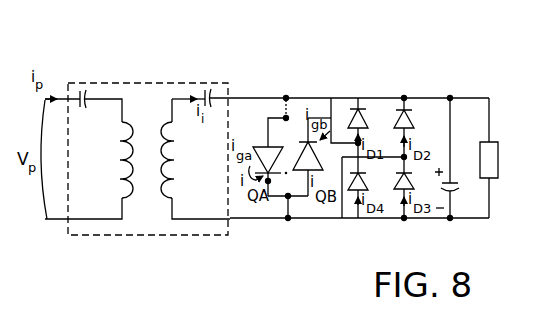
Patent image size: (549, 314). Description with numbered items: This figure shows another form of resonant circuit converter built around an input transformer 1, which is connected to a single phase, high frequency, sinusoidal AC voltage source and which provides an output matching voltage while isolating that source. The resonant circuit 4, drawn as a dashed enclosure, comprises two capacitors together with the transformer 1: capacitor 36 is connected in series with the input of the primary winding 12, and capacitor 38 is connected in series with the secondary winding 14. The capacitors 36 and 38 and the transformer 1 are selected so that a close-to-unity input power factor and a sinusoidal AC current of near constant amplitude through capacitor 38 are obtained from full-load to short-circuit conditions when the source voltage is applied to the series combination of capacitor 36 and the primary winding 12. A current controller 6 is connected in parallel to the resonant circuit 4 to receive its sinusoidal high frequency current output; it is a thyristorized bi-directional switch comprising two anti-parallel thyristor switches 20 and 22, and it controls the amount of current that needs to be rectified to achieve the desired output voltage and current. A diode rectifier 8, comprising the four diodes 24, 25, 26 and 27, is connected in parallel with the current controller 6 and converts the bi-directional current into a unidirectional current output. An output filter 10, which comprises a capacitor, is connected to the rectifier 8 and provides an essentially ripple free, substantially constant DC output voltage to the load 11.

The input transformer 1 is at (137, 165).
The resonant circuit 4 is at (97, 238).
The current controller 6 is at (284, 176).
The diode rectifier 8 is at (378, 156).
The output filter 10 is at (455, 203).
The load 11 is at (494, 182).
The primary winding 12 is at (123, 117).
The secondary winding 14 is at (163, 120).
The thyristor switch 20 is at (262, 146).
The thyristor switch 22 is at (297, 142).
The diode 24 is at (353, 107).
The diode 25 is at (354, 193).
The diode 26 is at (401, 107).
The diode 27 is at (399, 191).
The capacitor 36 is at (82, 104).
The capacitor 38 is at (212, 95).